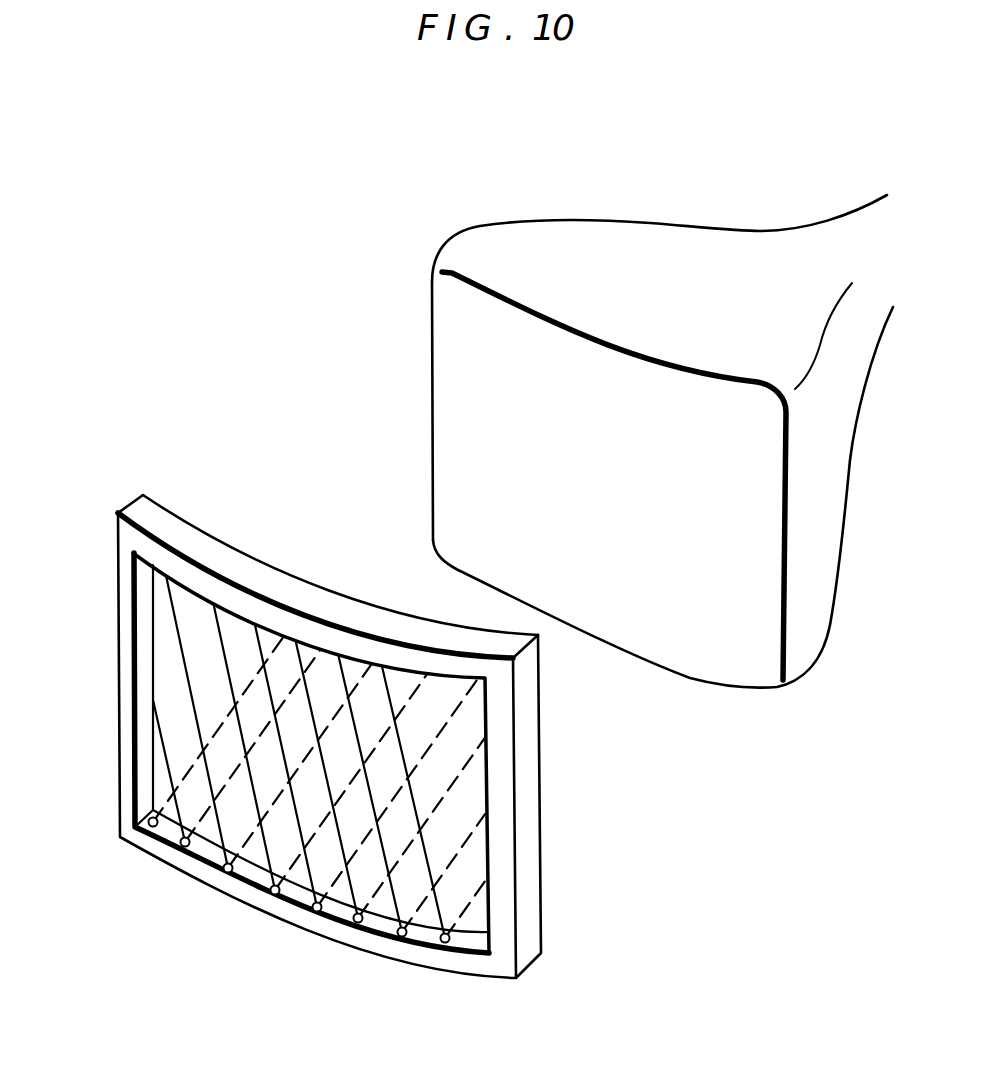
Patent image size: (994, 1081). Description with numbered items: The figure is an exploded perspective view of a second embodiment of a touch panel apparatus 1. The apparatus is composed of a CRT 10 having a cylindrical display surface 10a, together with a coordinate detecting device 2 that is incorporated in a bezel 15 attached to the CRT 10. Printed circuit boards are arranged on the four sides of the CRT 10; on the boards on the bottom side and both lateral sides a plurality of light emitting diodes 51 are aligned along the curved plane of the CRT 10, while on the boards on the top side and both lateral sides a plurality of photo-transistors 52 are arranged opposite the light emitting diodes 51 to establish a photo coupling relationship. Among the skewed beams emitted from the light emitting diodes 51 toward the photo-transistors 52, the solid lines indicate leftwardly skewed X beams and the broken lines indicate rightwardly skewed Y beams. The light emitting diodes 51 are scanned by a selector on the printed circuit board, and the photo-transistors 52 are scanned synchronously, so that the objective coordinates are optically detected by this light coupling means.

The touch panel apparatus 1 is at (291, 300).
The CRT 10 is at (633, 237).
The cylindrical display surface 10a is at (433, 396).
The coordinate detecting device 2 is at (543, 871).
The bezel 15 is at (340, 608).
The photo-transistors 52 is at (250, 624).
The light emitting diodes 51 is at (228, 873).